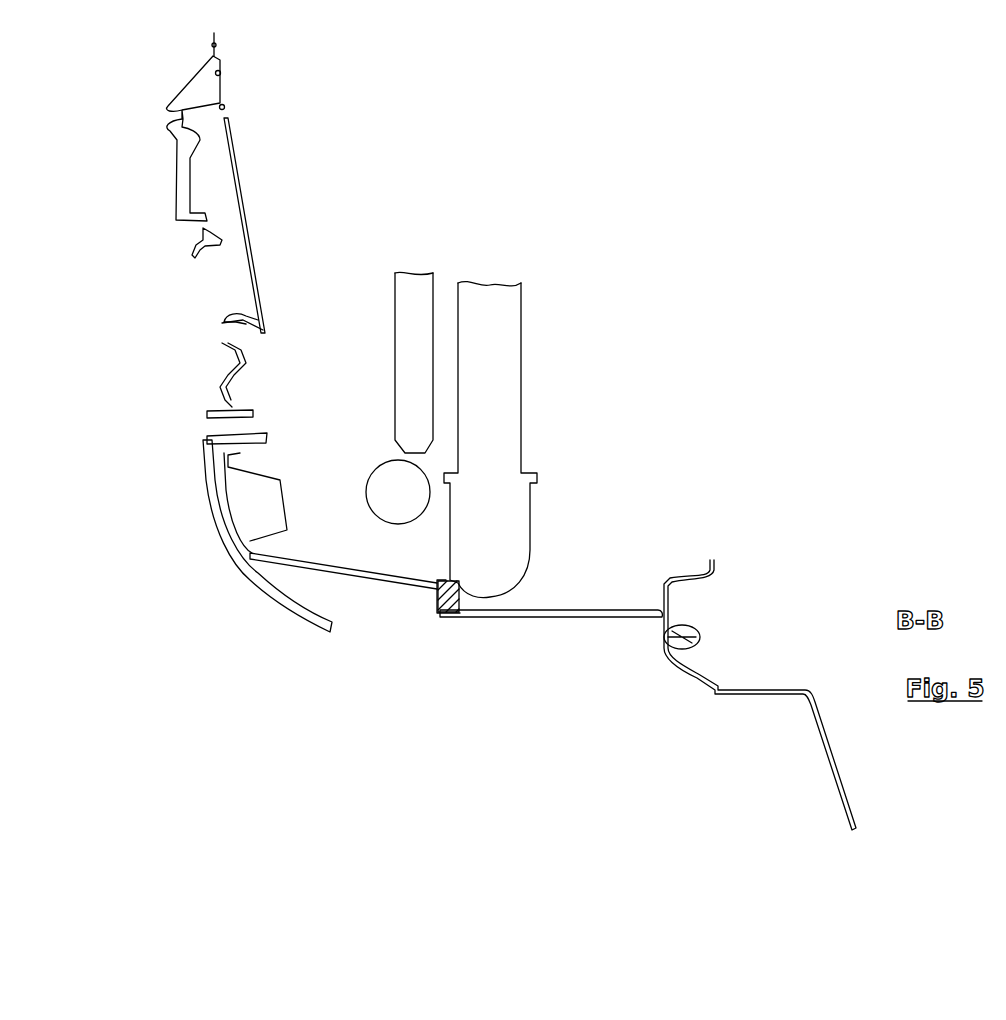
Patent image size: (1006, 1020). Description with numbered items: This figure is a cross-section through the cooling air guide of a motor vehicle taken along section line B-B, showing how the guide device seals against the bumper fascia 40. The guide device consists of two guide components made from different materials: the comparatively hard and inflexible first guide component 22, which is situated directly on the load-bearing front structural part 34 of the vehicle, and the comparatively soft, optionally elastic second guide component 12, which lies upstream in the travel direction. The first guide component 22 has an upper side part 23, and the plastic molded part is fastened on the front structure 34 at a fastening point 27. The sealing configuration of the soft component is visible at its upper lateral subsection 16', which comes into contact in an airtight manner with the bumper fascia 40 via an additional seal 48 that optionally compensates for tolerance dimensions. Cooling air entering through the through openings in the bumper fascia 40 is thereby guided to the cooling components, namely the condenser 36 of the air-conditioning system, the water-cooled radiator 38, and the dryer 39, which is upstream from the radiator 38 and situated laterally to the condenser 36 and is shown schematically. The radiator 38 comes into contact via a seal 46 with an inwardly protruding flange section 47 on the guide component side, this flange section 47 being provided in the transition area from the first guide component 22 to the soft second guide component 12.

The second guide component 12 is at (353, 698).
The upper lateral subsection 16' is at (343, 616).
The first guide component 22 is at (553, 690).
The upper side part 23 is at (527, 617).
The fastening point 27 is at (663, 642).
The load-bearing structural part 34 is at (670, 583).
The condenser 36 is at (415, 283).
The water-cooled radiator 38 is at (503, 297).
The dryer 39 is at (390, 487).
The bumper fascia 40 is at (253, 275).
The seal 46 is at (447, 612).
The flange section 47 is at (433, 602).
The additional seal 48 is at (270, 520).